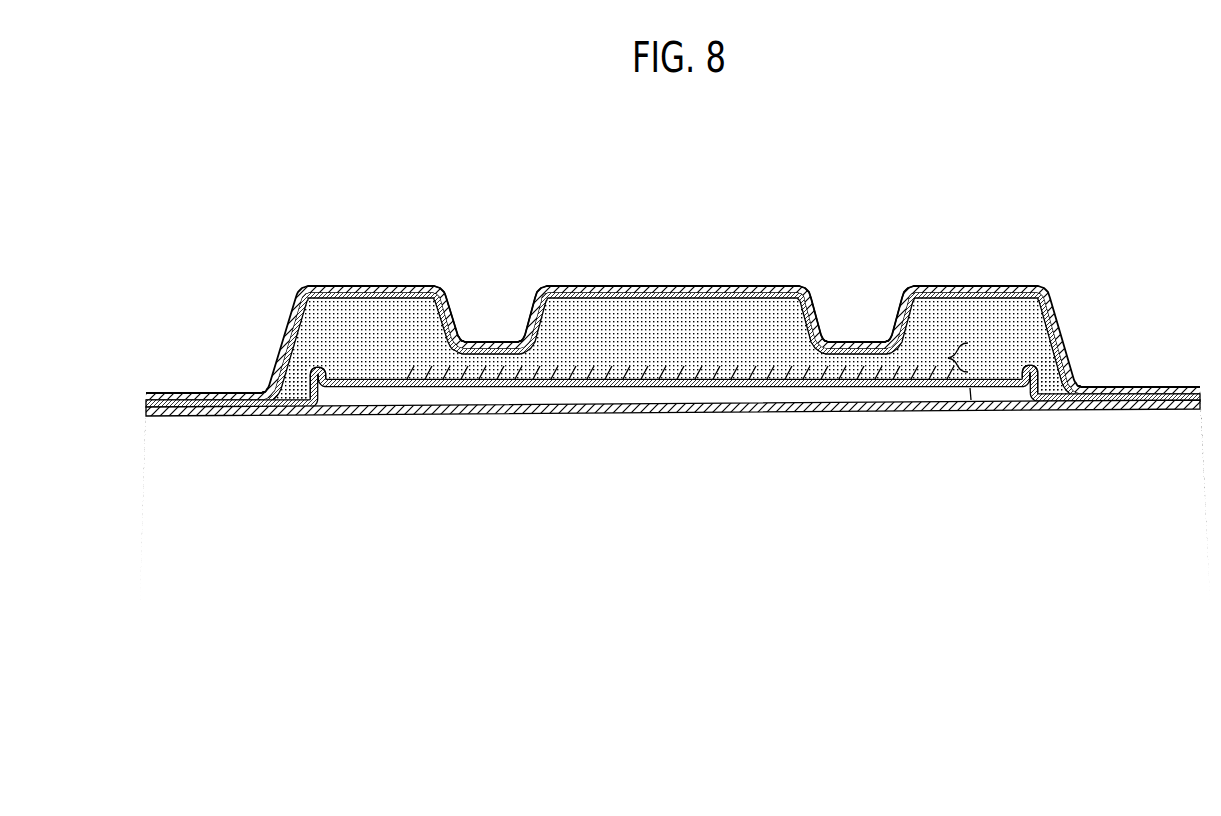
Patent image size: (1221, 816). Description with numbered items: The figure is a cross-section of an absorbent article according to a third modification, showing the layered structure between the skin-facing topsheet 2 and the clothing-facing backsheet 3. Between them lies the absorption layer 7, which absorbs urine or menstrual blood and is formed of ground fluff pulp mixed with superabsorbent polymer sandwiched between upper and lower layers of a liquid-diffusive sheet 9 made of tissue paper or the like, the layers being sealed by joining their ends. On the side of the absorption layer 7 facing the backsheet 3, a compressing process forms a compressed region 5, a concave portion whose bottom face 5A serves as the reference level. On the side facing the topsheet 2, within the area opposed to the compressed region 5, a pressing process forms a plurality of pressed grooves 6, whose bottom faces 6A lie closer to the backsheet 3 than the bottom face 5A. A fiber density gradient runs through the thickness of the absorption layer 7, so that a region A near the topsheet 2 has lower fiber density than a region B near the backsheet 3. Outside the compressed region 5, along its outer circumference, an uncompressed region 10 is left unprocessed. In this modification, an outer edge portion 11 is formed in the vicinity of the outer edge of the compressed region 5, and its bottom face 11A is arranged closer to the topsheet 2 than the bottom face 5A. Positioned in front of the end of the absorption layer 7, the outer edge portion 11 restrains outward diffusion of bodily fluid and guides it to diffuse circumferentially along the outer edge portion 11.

The topsheet 2 is at (675, 399).
The backsheet 3 is at (390, 416).
The compressed region 5 is at (673, 390).
The bottom face of the compressed region 5A is at (768, 388).
The pressed grooves 6 is at (479, 296).
The bottom faces of the pressed grooves 6A is at (503, 338).
The absorption layer 7 is at (596, 308).
The liquid-diffusive sheet 9 is at (742, 288).
The uncompressed region 10 is at (269, 386).
The outer edge portion 11 is at (321, 413).
The bottom face of the outer edge portion 11A is at (288, 388).
The region A is at (970, 398).
The region B is at (970, 400).